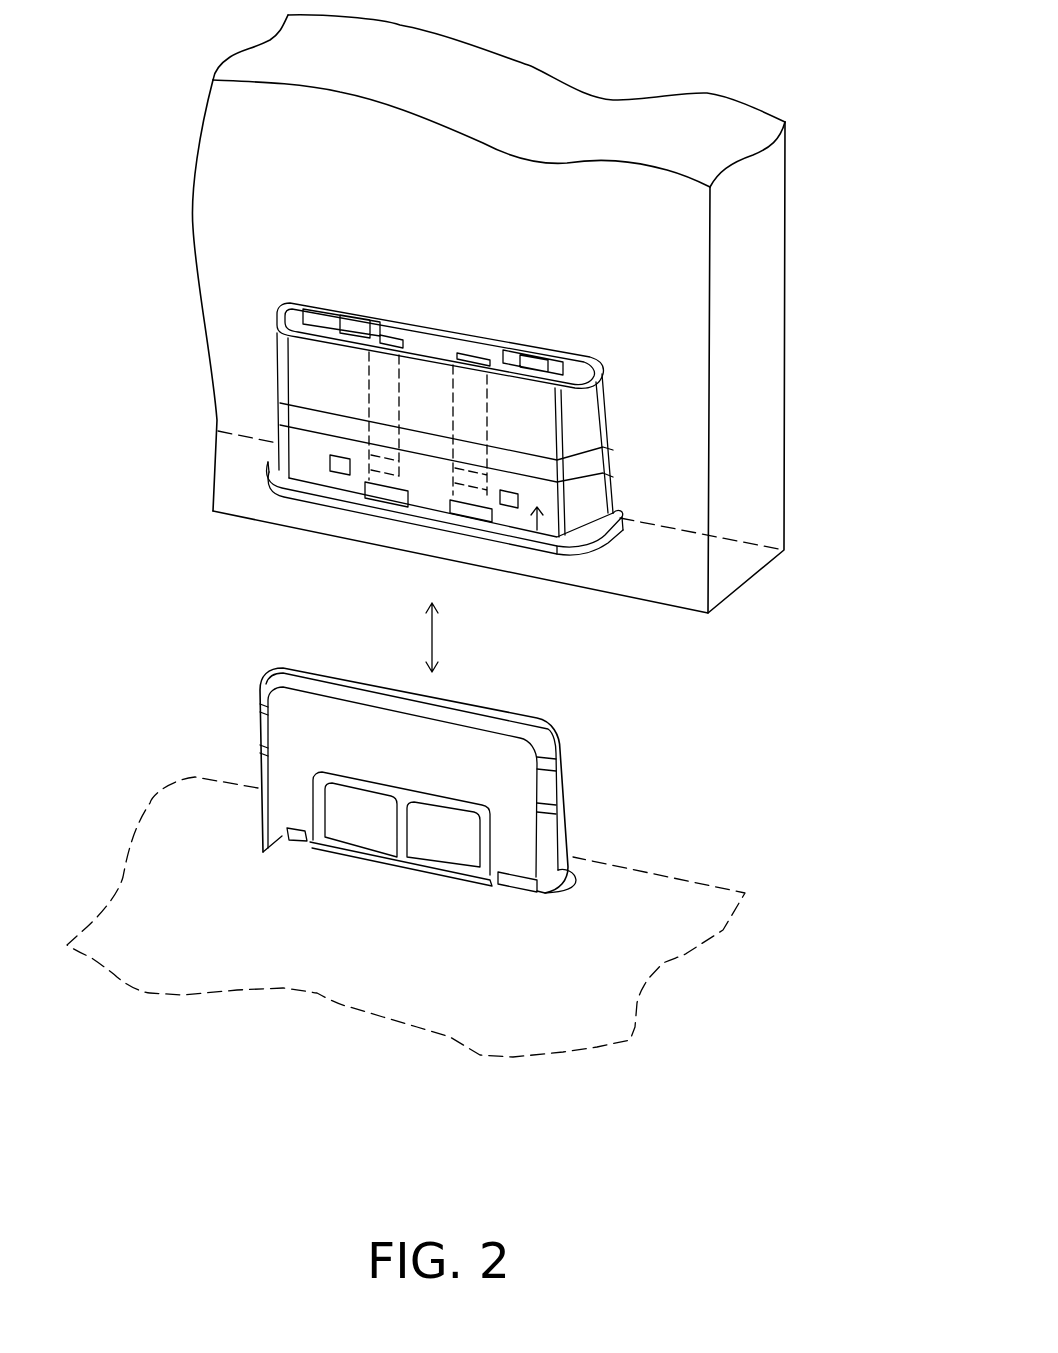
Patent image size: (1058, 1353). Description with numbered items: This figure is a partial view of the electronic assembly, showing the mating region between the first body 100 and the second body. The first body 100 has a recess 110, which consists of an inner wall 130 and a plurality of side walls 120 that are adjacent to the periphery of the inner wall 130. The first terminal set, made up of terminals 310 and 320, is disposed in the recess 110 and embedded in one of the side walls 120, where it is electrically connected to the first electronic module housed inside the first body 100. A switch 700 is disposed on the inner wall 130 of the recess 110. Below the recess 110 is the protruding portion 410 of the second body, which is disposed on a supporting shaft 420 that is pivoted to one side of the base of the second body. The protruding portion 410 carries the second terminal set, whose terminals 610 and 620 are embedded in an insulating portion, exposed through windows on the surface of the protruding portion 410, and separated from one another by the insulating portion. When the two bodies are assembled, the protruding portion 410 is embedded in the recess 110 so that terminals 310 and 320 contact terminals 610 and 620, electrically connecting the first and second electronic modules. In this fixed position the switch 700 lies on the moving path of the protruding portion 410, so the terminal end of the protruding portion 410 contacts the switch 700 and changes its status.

The first body 100 is at (752, 377).
The recess 110 is at (535, 532).
The side walls 120 is at (570, 430).
The inner wall 130 is at (578, 366).
The terminal 310 is at (370, 383).
The terminal 320 is at (470, 410).
The protruding portion 410 is at (260, 685).
The supporting shaft 420 is at (635, 948).
The terminal 610 is at (365, 833).
The terminal 620 is at (453, 863).
The switch 700 is at (527, 348).